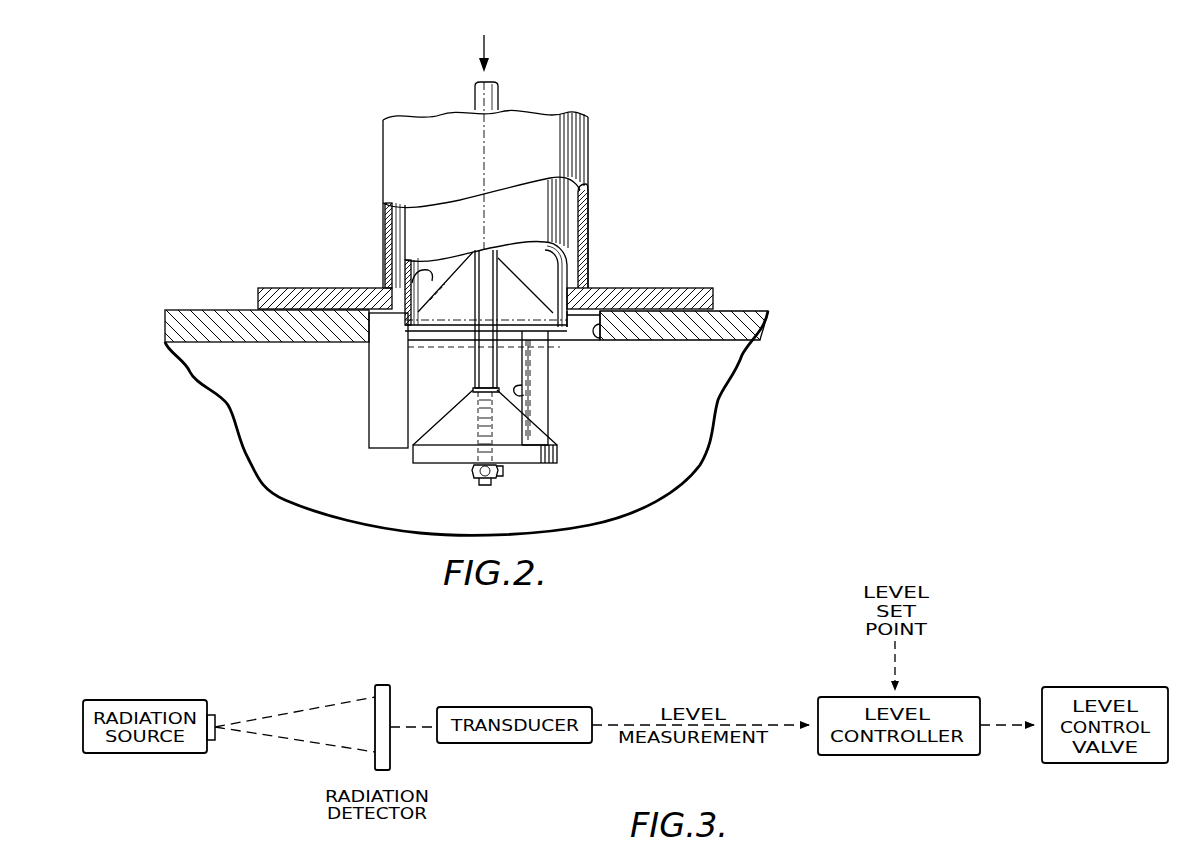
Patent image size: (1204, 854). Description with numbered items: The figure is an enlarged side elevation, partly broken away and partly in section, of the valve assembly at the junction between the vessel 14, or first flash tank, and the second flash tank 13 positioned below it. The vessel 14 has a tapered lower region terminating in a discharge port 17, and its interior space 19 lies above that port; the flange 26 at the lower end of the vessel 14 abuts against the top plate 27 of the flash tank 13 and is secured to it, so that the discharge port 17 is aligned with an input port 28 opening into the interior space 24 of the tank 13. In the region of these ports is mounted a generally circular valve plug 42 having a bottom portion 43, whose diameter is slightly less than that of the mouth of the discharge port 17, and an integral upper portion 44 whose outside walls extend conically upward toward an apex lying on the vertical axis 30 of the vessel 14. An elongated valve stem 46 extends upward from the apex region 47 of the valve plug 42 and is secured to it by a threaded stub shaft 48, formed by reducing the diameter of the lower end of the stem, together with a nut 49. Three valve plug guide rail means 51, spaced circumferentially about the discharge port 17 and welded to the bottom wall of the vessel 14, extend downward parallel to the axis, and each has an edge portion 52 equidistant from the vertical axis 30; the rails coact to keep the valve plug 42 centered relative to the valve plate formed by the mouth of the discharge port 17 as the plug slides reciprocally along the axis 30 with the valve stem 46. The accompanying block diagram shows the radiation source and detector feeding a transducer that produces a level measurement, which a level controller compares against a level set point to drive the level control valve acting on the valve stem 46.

The second flash tank 13 is at (757, 366).
The vessel 14 is at (604, 147).
The discharge port 17 is at (562, 274).
The interior space 19 is at (412, 276).
The interior space 24 is at (690, 393).
The flange 26 is at (715, 295).
The top plate 27 is at (771, 322).
The input port 28 is at (591, 339).
The vertical axis 30 is at (483, 166).
The valve plug 42 is at (441, 451).
The bottom portion 43 is at (559, 456).
The upper portion 44 is at (470, 422).
The valve stem 46 is at (473, 288).
The apex region 47 is at (482, 385).
The threaded stub shaft 48 is at (484, 480).
The nut 49 is at (502, 471).
The valve plug guide rail means 51 is at (385, 362).
The edge portion 52 is at (527, 397).